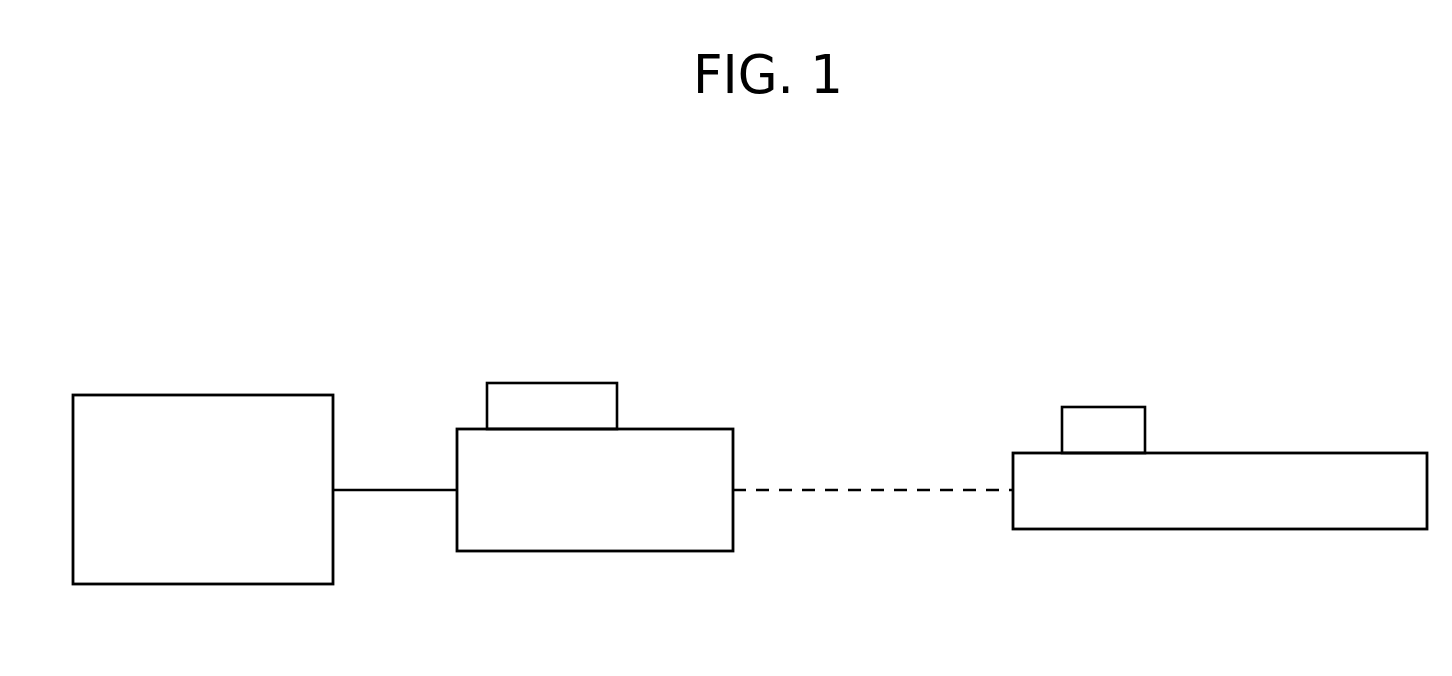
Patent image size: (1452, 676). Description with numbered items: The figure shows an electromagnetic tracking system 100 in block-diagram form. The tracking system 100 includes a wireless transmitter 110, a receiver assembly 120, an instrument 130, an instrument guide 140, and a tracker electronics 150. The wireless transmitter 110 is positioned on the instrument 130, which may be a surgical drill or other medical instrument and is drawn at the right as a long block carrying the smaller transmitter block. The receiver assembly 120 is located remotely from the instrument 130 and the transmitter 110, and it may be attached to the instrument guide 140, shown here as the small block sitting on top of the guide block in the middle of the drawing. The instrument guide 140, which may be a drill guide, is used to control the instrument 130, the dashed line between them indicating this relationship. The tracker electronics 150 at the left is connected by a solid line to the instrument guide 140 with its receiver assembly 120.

The electromagnetic tracking system 100 is at (263, 218).
The wireless transmitter 110 is at (1103, 407).
The receiver assembly 120 is at (511, 383).
The instrument 130 is at (1350, 453).
The instrument guide 140 is at (693, 429).
The tracker electronics 150 is at (242, 395).